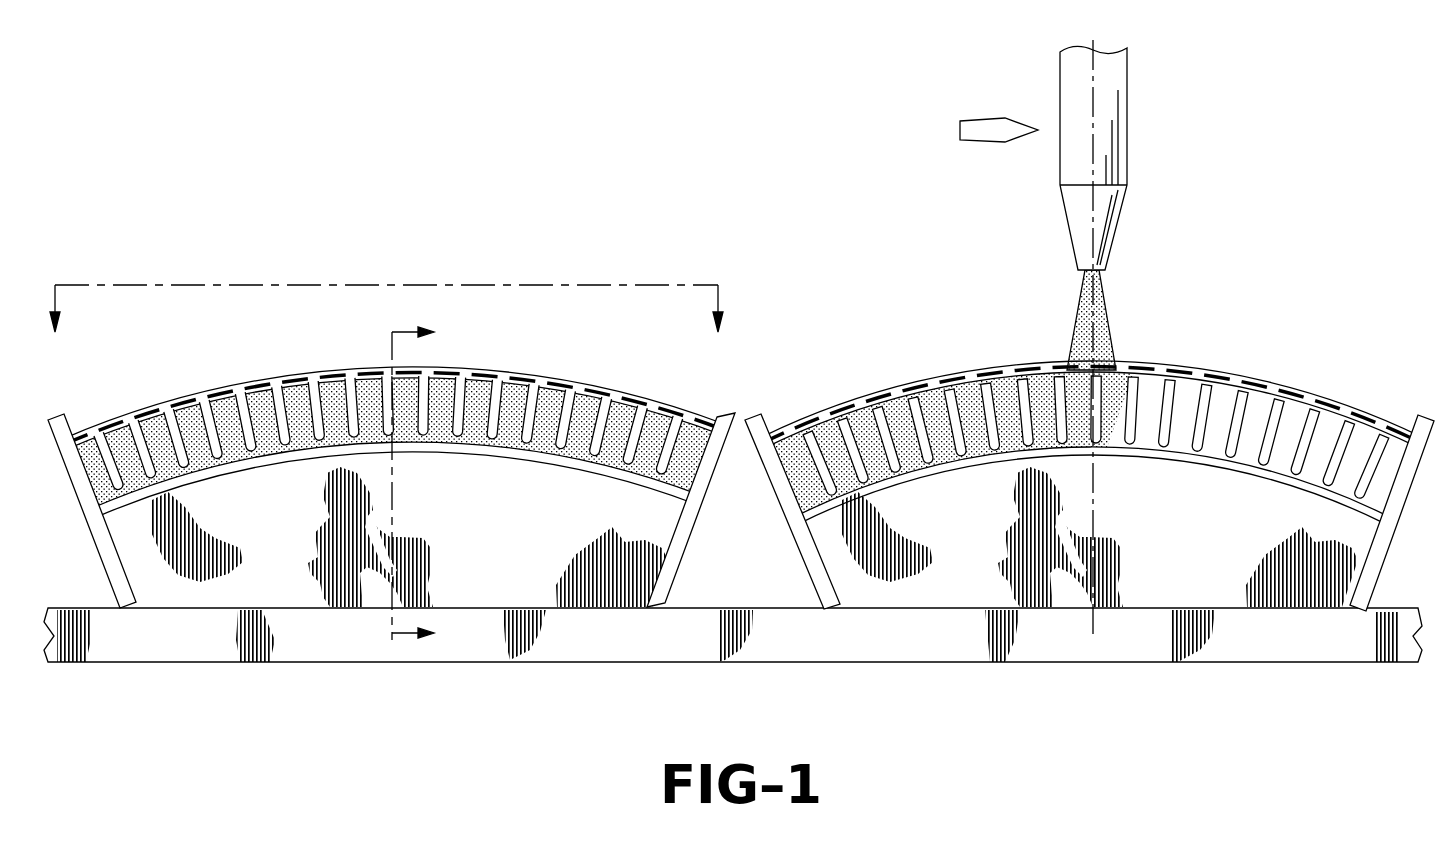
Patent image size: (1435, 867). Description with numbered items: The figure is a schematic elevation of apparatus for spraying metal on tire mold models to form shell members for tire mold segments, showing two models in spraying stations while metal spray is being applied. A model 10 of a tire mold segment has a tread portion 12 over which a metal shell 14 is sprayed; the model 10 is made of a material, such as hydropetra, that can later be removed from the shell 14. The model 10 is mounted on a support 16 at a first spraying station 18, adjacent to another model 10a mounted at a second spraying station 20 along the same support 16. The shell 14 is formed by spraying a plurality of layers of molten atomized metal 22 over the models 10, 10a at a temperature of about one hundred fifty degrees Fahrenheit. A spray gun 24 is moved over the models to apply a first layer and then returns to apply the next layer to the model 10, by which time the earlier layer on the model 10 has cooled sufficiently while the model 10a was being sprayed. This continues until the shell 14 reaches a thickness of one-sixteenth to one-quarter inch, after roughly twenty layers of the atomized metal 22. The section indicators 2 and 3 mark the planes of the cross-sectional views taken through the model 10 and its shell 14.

The model 10 is at (487, 503).
The model 10a is at (1187, 503).
The tread portion 12 is at (633, 418).
The metal shell 14 is at (268, 384).
The support 16 is at (680, 643).
The first spraying station 18 is at (333, 655).
The second spraying station 20 is at (1054, 655).
The molten atomized metal 22 is at (1103, 337).
The spray gun 24 is at (1108, 80).
The section line 2- 2 is at (387, 326).
The section line 3- 3 is at (424, 484).